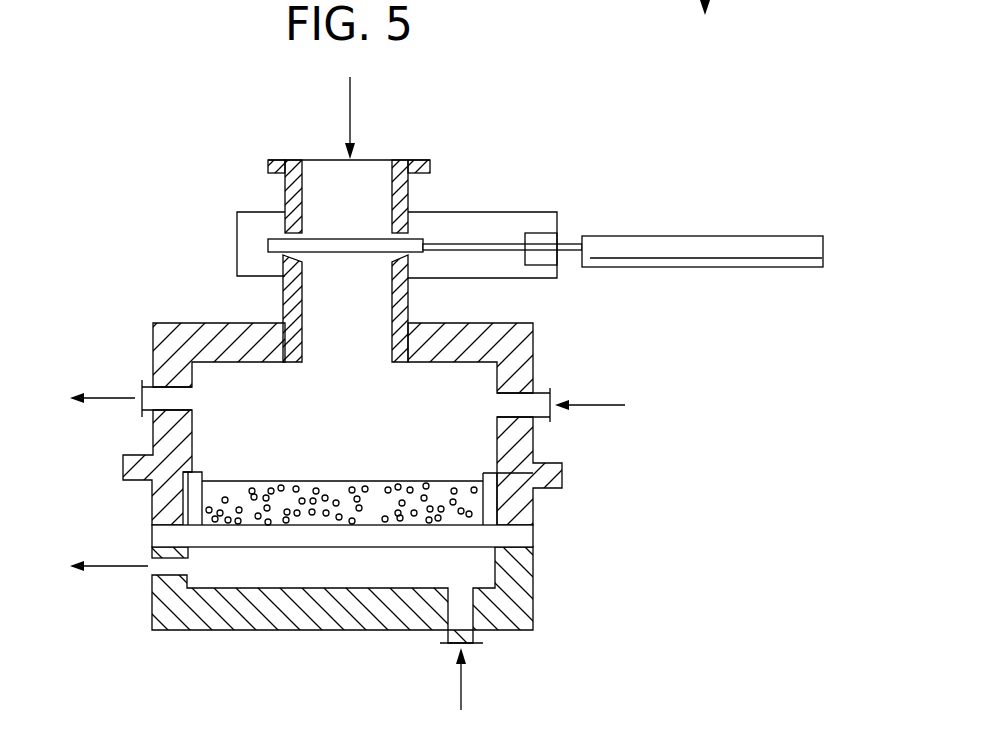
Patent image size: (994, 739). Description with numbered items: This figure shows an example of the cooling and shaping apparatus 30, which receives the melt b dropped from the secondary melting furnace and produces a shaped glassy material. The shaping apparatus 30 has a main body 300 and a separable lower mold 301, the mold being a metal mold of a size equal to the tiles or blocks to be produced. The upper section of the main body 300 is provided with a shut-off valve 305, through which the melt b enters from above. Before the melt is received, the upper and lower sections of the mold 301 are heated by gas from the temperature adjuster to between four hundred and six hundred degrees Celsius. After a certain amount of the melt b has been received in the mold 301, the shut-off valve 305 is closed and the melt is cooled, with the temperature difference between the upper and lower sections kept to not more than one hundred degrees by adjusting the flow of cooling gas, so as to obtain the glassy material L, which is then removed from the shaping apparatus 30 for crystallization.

The shaping apparatus 30 is at (202, 242).
The shut-off valve 305 is at (472, 235).
The main body 300 is at (535, 331).
The lower mold 301 is at (282, 540).
The glassy material L is at (353, 482).
The melt b is at (359, 118).